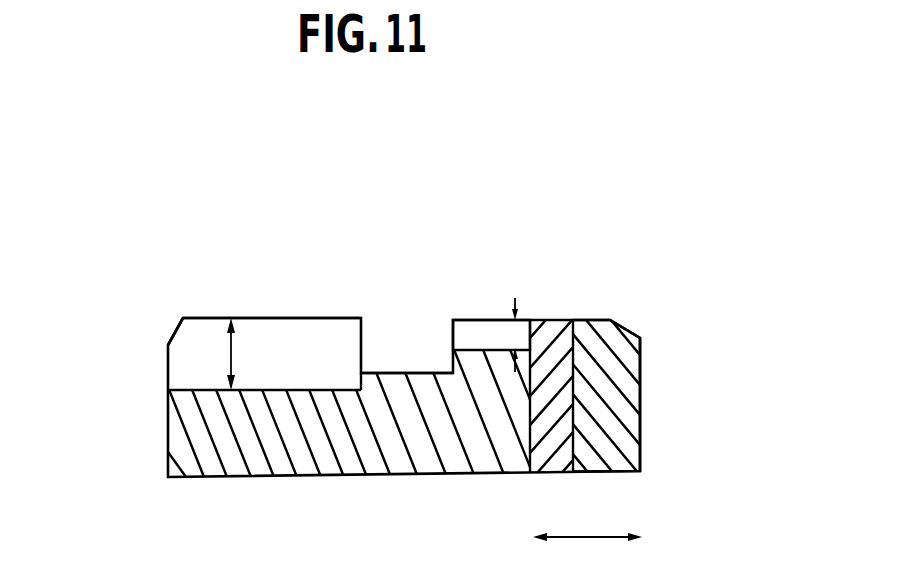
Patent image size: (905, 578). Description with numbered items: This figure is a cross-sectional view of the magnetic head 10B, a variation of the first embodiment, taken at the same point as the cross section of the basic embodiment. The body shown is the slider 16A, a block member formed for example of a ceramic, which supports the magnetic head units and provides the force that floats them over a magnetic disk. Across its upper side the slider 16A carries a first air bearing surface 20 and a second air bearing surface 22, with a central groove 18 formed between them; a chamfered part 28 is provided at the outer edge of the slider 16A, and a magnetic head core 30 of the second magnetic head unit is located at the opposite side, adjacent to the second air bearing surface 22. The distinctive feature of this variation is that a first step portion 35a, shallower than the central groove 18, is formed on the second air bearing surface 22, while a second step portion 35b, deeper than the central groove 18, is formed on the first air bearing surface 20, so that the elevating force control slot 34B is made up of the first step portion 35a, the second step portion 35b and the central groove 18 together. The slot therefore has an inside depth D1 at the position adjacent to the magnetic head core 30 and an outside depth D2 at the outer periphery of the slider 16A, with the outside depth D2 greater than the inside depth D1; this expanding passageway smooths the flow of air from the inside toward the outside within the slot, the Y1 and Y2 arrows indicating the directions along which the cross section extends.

The magnetic head 10B is at (270, 210).
The slider 16A is at (358, 482).
The central groove 18 is at (420, 373).
The first air bearing surface 20 is at (267, 318).
The second air bearing surface 22 is at (603, 319).
The chamfered part 28 is at (177, 328).
The magnetic head core 30 is at (559, 463).
The elevating force control slot 34B is at (598, 147).
The first step portion 35a is at (467, 350).
The second step portion 35b is at (291, 390).
The inside depth D1 is at (514, 339).
The outside depth D2 is at (260, 354).
The direction Y1 is at (563, 535).
The direction Y2 is at (661, 535).